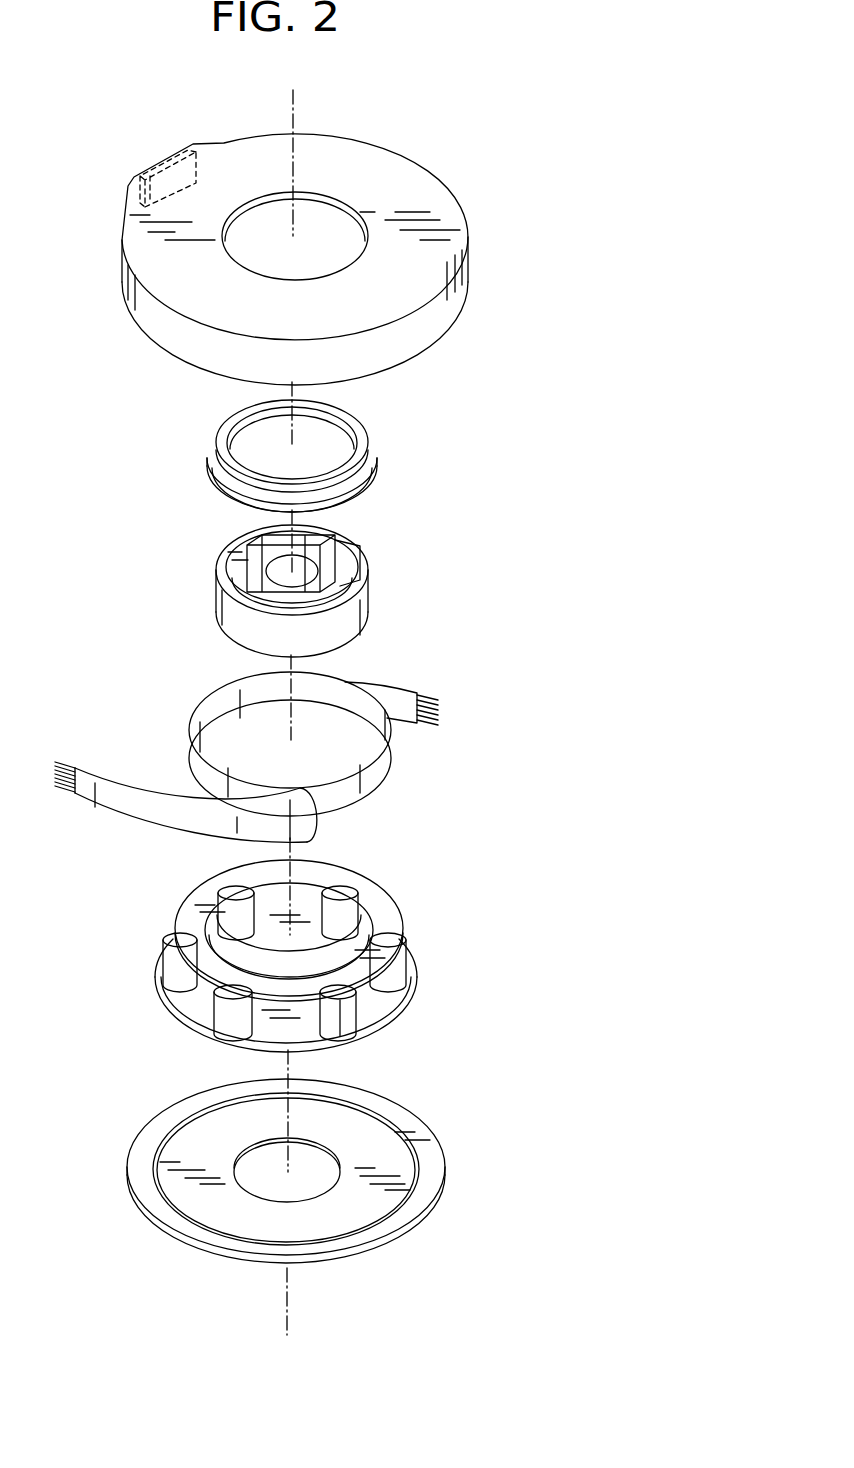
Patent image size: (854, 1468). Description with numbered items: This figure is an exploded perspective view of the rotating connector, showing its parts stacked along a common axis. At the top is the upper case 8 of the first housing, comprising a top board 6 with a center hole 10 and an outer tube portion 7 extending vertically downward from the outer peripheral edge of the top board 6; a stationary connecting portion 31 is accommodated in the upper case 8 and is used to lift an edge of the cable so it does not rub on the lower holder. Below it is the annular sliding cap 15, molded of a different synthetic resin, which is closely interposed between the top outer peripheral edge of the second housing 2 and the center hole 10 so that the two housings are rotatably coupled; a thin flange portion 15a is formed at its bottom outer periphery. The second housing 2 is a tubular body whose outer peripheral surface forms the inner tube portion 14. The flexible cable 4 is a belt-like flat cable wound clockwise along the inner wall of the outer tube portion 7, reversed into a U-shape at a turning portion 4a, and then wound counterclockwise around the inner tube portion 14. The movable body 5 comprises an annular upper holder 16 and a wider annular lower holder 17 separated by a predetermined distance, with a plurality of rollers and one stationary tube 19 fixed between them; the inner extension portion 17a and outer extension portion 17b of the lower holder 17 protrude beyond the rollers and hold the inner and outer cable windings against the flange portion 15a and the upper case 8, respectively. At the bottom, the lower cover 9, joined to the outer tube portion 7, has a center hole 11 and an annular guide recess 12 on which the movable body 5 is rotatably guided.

The second housing 2 is at (250, 591).
The flexible cable 4 is at (246, 760).
The turning portion 4a is at (320, 825).
The movable body 5 is at (302, 968).
The top board 6 is at (375, 170).
The outer tube portion 7 is at (198, 340).
The upper case 8 is at (307, 243).
The lower cover 9 is at (322, 1184).
The center hole 10 is at (268, 218).
The center hole 11 is at (265, 1180).
The annular guide recess 12 is at (382, 1210).
The inner tube portion 14 is at (217, 602).
The sliding cap 15 is at (288, 456).
The flange portion 15a is at (208, 462).
The upper holder 16 is at (185, 916).
The lower holder 17 is at (326, 999).
The inner extension portion 17a is at (372, 926).
The outer extension portion 17b is at (412, 997).
The stationary tube 19 is at (357, 1013).
The stationary connecting portion 31 is at (160, 157).